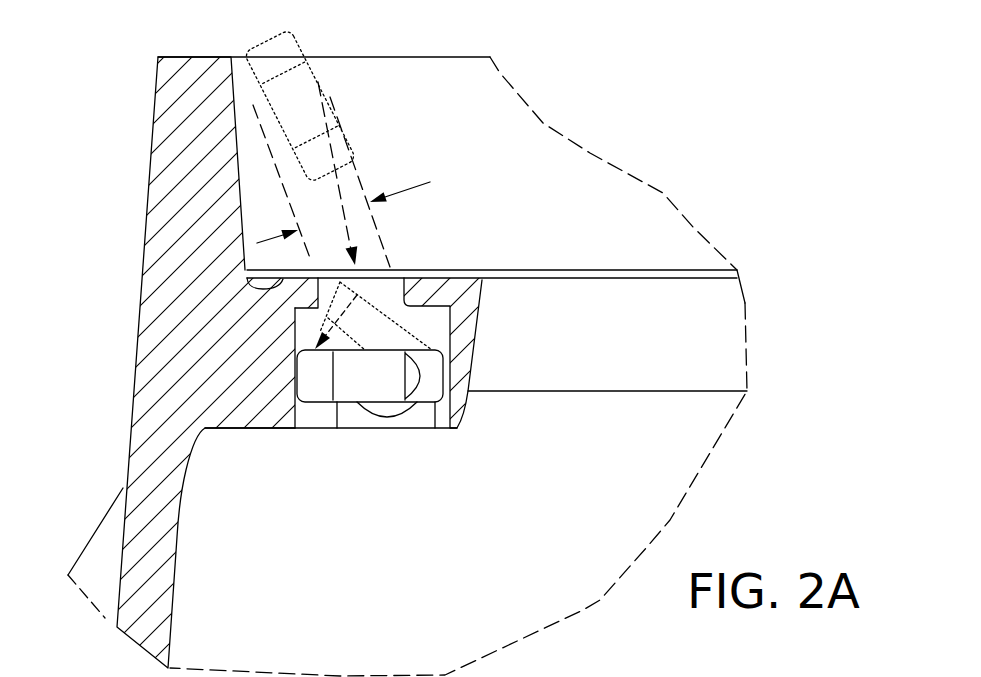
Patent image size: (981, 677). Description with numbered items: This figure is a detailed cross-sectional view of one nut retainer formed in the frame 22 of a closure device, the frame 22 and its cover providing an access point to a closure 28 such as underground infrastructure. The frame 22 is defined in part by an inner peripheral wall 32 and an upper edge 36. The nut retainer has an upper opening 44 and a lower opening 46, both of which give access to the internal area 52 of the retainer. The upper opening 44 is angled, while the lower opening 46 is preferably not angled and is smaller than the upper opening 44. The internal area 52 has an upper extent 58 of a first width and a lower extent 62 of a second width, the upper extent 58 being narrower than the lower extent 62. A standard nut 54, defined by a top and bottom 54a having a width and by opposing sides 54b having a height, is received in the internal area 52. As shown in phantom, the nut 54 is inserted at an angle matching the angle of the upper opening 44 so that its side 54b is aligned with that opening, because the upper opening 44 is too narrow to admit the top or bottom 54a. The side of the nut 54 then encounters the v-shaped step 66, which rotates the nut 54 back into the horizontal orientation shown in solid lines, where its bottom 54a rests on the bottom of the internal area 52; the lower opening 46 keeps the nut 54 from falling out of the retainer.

The frame 22 is at (148, 253).
The closure 28 is at (497, 578).
The inner peripheral wall 32 is at (178, 537).
The upper edge 36 is at (158, 56).
The upper opening 44 is at (405, 292).
The lower opening 46 is at (322, 421).
The internal area 52 is at (437, 322).
The nut 54 is at (423, 378).
The top and bottom of nut 54a is at (340, 428).
The opposing sides of nut 54b is at (447, 362).
The upper extent 58 is at (320, 282).
The lower extent 62 is at (293, 398).
The v-shaped step 66 is at (376, 418).